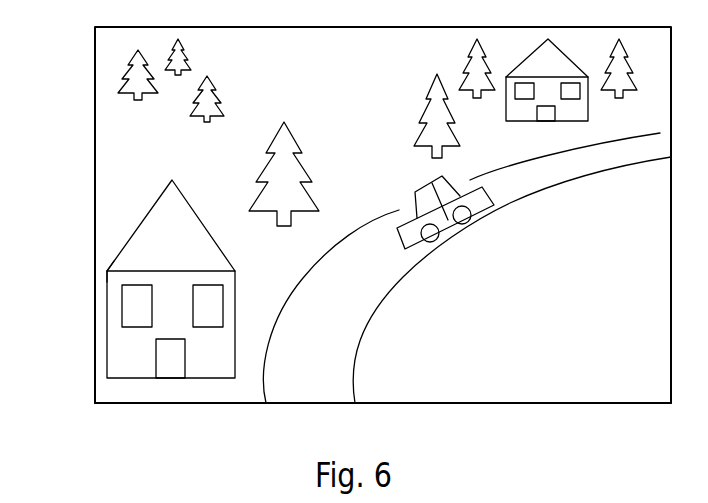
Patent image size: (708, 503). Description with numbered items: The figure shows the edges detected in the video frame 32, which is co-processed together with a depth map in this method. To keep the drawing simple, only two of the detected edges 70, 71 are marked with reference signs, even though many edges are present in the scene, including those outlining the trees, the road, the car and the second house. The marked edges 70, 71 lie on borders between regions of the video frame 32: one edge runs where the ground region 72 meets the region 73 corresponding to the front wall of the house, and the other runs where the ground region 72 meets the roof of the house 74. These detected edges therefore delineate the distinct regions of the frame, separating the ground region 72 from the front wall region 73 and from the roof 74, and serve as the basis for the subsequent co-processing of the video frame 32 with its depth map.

The video frame 32 is at (95, 145).
The edge 70 is at (139, 279).
The edge 71 is at (125, 247).
The ground region 72 is at (108, 393).
The region corresponding to the front wall of the house 73 is at (113, 360).
The roof of the house 74 is at (118, 268).